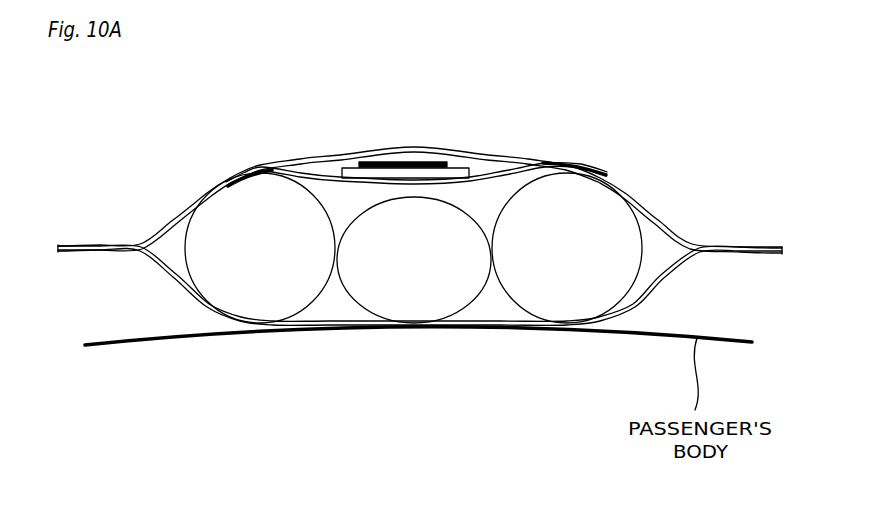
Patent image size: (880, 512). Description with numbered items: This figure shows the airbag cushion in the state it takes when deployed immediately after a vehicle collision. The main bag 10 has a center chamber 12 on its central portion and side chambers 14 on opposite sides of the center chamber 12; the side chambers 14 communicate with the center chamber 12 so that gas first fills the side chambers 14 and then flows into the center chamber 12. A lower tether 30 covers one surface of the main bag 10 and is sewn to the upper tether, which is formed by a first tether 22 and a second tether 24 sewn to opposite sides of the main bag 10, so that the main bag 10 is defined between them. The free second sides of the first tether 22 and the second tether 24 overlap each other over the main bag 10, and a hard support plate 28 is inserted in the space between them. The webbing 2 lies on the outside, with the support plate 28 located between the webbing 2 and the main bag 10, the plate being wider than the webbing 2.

The webbing 2 is at (427, 162).
The main bag 10 is at (413, 322).
The center chamber 12 is at (497, 413).
The side chambers 14 is at (305, 312).
The first tether 22 is at (650, 218).
The second tether 24 is at (258, 170).
The support plate 28 is at (368, 173).
The lower tether 30 is at (170, 282).